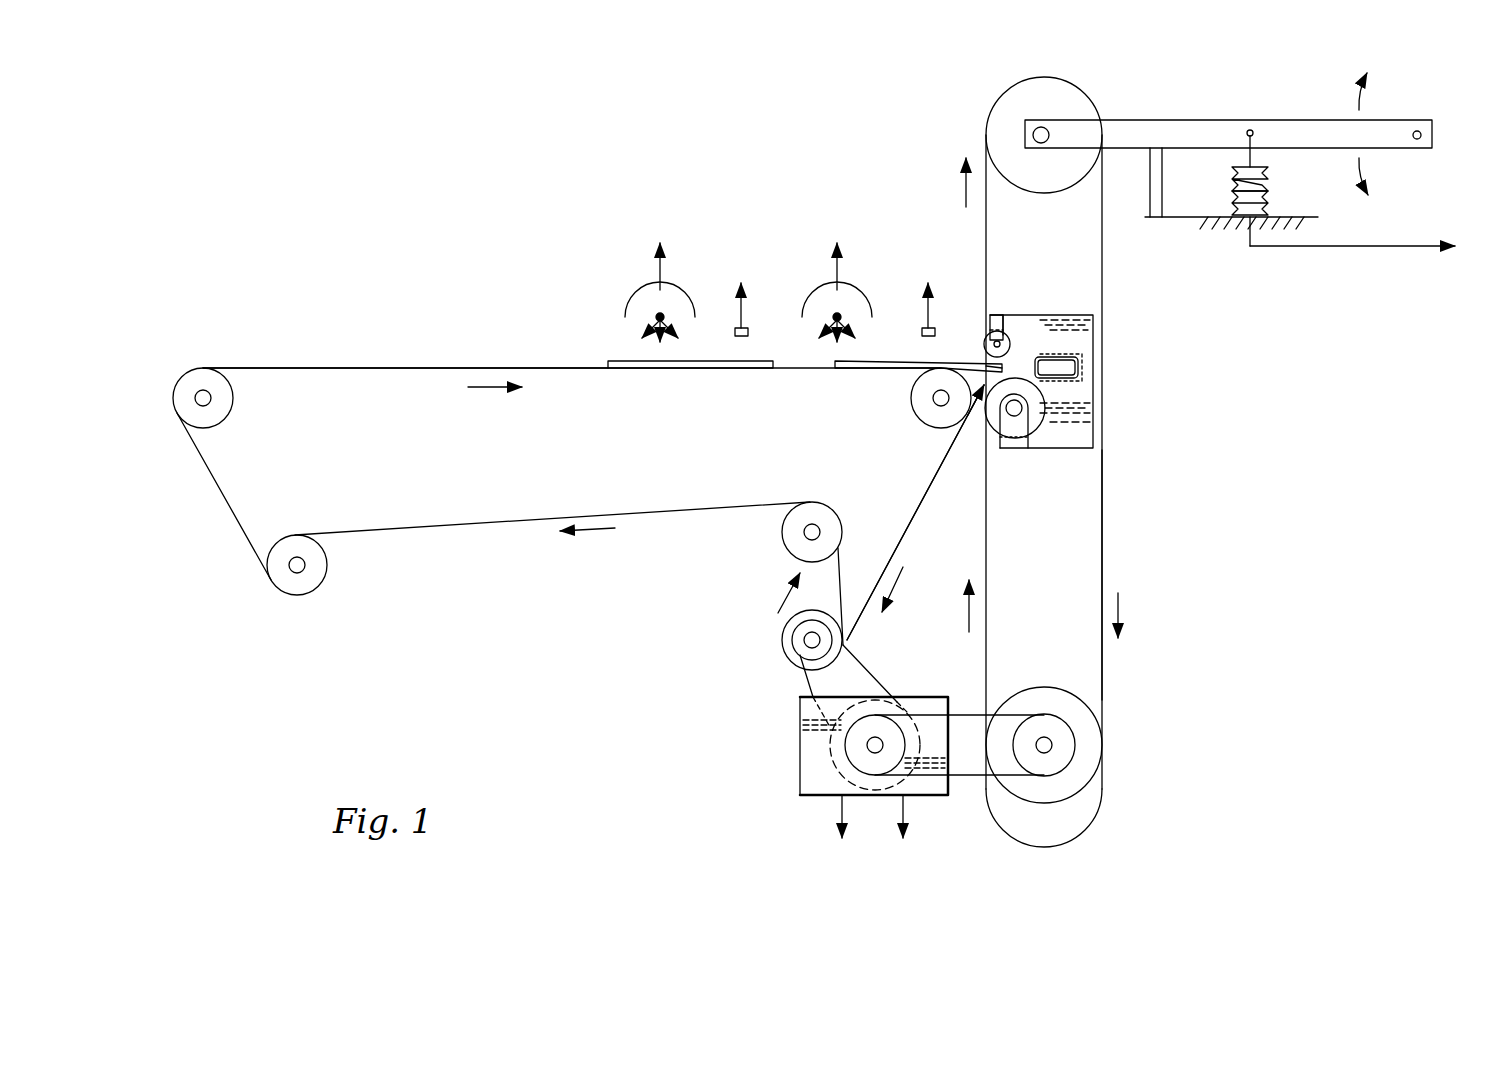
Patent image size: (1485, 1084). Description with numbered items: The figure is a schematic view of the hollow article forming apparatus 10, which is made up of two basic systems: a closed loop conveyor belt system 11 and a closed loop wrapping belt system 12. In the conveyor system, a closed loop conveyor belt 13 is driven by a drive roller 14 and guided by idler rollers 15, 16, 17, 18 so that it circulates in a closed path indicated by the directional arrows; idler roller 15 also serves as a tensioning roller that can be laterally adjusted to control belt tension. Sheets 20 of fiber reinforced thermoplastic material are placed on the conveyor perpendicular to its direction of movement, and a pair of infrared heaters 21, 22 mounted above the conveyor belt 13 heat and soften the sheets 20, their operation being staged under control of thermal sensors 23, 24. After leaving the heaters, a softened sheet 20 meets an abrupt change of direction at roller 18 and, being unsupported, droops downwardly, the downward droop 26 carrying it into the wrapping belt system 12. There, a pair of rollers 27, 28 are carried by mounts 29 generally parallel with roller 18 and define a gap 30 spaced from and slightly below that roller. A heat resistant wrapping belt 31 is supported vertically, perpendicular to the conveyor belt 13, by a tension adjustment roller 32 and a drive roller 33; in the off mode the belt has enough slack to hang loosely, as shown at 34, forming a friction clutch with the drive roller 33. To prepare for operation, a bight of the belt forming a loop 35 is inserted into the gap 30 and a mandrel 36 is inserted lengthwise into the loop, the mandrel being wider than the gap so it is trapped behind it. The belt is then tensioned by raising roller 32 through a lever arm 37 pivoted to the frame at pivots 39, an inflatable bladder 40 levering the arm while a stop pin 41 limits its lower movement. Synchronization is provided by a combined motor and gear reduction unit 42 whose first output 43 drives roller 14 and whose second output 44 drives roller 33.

The hollow article forming apparatus 10 is at (772, 198).
The closed loop conveyor belt system 11 is at (472, 358).
The closed loop wrapping belt system 12 is at (1110, 282).
The closed loop conveyor belt 13 is at (308, 365).
The drive roller 14 is at (782, 640).
The idler roller 15 is at (788, 552).
The idler roller 16 is at (285, 593).
The idler roller 17 is at (174, 388).
The idler roller 18 is at (912, 410).
The sheets 20 is at (638, 360).
The infrared heater 21 is at (637, 292).
The infrared heater 22 is at (814, 292).
The thermal sensor 23 is at (735, 328).
The thermal sensor 24 is at (922, 328).
The downward droop 26 is at (978, 360).
The roller 27 is at (1040, 420).
The roller 28 is at (1003, 340).
The mounts 29 is at (993, 312).
The gap 30 is at (977, 405).
The wrapping belt 31 is at (1104, 562).
The tension adjustment roller 32 is at (1068, 80).
The drive roller 33 is at (1082, 724).
The slack belt portion 34 is at (1048, 848).
The loop 35 is at (1063, 378).
The mandrel 36 is at (1082, 358).
The lever arm 37 is at (1157, 120).
The pivots 39 is at (1420, 128).
The inflatable bladder 40 is at (1272, 172).
The stop pin 41 is at (1150, 185).
The motor and gear reduction unit 42 is at (800, 745).
The first output 43 is at (800, 680).
The second output 44 is at (970, 778).